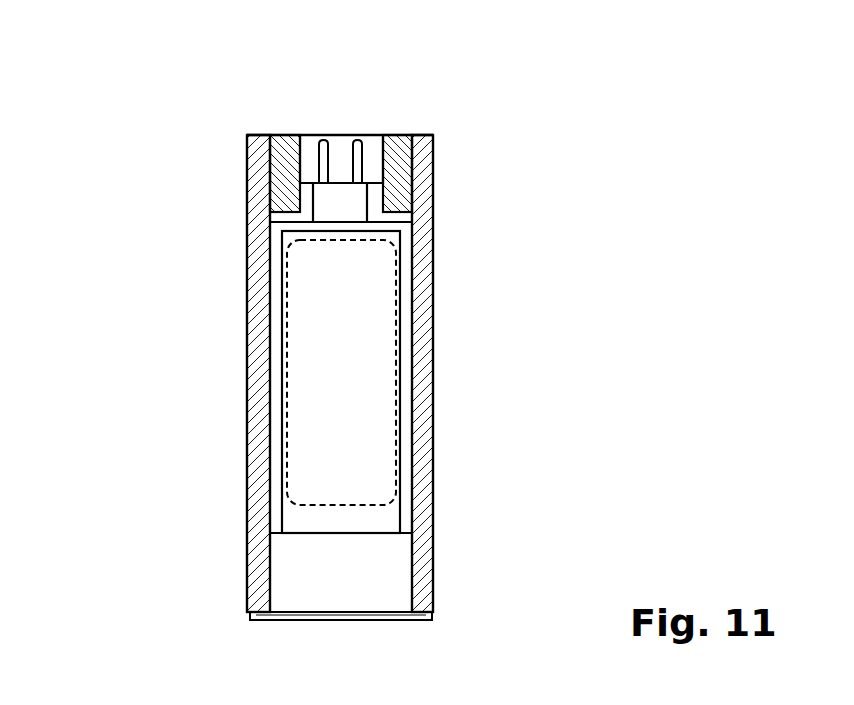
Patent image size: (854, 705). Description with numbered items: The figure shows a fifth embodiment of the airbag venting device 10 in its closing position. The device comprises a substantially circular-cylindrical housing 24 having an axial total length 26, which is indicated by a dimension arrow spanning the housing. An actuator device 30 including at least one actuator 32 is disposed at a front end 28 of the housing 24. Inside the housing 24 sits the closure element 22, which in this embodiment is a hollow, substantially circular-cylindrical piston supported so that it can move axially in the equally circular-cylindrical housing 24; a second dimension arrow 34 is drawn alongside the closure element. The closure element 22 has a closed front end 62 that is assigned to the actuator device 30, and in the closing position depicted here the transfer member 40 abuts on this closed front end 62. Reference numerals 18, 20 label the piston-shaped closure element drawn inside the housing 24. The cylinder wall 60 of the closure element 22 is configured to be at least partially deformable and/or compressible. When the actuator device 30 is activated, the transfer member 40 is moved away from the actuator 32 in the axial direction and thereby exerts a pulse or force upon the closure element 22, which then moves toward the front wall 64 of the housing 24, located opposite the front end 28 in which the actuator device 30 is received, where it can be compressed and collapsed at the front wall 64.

The airbag venting device 10 is at (195, 103).
The battery cell 18 is at (411, 382).
The cell housing 20 is at (400, 392).
The closure element 22 is at (313, 297).
The housing 24 is at (262, 558).
The axial total length 26 is at (547, 135).
The front end 28 is at (310, 126).
The actuator device 30 is at (436, 118).
The actuator 32 is at (395, 148).
The cell height 34 is at (165, 505).
The transfer member 40 is at (311, 199).
The cylinder wall 60 is at (406, 452).
The closed front end 62 is at (383, 228).
The front wall 64 is at (252, 614).